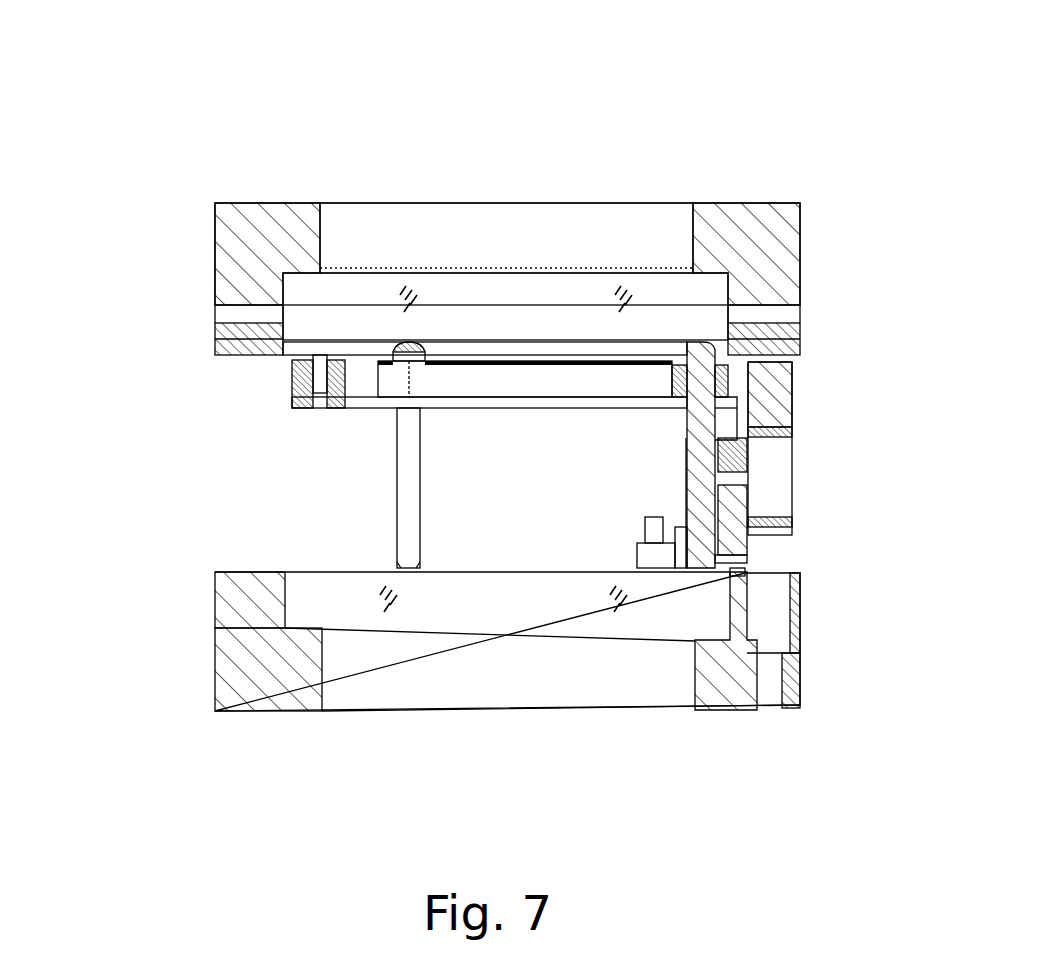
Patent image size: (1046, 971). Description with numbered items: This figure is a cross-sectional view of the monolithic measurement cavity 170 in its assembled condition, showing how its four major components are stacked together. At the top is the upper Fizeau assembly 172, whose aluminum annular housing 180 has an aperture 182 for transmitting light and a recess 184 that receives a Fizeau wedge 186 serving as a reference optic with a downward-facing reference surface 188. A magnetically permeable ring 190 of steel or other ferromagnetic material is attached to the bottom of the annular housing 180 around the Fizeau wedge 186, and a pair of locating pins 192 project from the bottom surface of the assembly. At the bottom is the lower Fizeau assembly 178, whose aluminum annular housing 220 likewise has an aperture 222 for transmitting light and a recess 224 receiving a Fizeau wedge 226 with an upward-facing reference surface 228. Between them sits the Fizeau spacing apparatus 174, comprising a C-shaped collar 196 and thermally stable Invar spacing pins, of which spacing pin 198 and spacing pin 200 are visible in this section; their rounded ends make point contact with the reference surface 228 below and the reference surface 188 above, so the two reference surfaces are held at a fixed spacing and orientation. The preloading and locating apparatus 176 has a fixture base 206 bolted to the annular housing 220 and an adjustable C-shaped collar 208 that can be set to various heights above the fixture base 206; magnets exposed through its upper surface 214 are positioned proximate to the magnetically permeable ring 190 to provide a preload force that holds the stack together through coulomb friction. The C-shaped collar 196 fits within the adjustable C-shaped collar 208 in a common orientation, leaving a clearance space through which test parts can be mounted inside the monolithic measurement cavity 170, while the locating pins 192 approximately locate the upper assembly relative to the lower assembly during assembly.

The monolithic measurement cavity 170 is at (357, 120).
The upper Fizeau assembly 172 is at (215, 243).
The Fizeau spacing apparatus 174 is at (375, 385).
The preloading and locating apparatus 176 is at (792, 487).
The lower Fizeau assembly 178 is at (215, 606).
The annular housing 180 is at (770, 233).
The aperture 182 is at (693, 233).
The recess 184 is at (283, 303).
The Fizeau wedge 186 is at (460, 300).
The reference surface 188 is at (588, 335).
The magnetically permeable ring 190 is at (238, 358).
The locating pins 192 is at (317, 372).
The C-shaped collar 196 is at (452, 378).
The spacing pin 198 is at (407, 532).
The spacing pin 200 is at (710, 422).
The fixture base 206 is at (743, 552).
The adjustable C-shaped collar 208 is at (290, 397).
The upper surface 214 is at (762, 357).
The annular housing 220 is at (214, 668).
The aperture 222 is at (320, 685).
The recess 224 is at (288, 570).
The Fizeau wedge 226 is at (455, 617).
The reference surface 228 is at (502, 570).